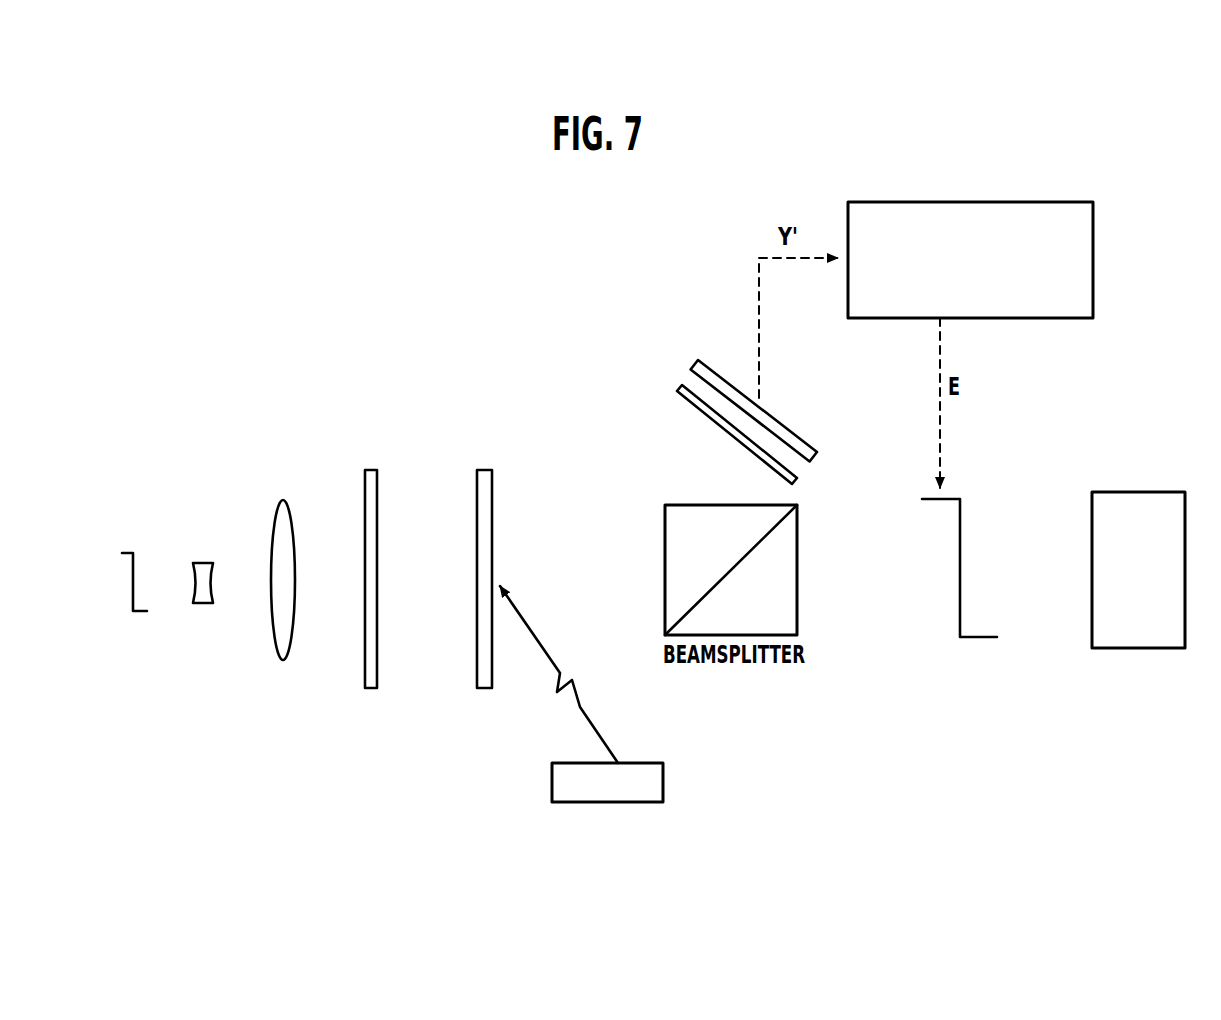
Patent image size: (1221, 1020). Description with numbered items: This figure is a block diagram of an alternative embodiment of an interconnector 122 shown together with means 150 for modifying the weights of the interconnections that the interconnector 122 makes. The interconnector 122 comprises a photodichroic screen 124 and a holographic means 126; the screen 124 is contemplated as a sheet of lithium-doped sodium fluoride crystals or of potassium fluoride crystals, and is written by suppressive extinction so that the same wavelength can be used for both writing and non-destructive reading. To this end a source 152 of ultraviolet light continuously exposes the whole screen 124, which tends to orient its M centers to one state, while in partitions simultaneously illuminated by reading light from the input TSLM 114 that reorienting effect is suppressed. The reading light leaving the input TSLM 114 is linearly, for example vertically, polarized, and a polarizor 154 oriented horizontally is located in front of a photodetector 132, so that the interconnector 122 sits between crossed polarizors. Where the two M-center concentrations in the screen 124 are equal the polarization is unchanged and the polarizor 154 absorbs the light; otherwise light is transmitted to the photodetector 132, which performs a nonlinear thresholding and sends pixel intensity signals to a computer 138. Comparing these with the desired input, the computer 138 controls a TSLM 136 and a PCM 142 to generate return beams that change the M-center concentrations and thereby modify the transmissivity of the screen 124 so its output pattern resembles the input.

The input TSLM 114 is at (137, 565).
The interconnector 122 is at (504, 416).
The photodichroic screen 124 is at (493, 492).
The holographic means 126 is at (364, 658).
The photodetector 132 is at (710, 362).
The TSLM 136 is at (962, 603).
The computer 138 is at (1093, 241).
The PCM 142 is at (1157, 648).
The means for modifying the weights of the interconnections 150 is at (1124, 396).
The source of ultraviolet light 152 is at (665, 780).
The polarizor 154 is at (686, 402).